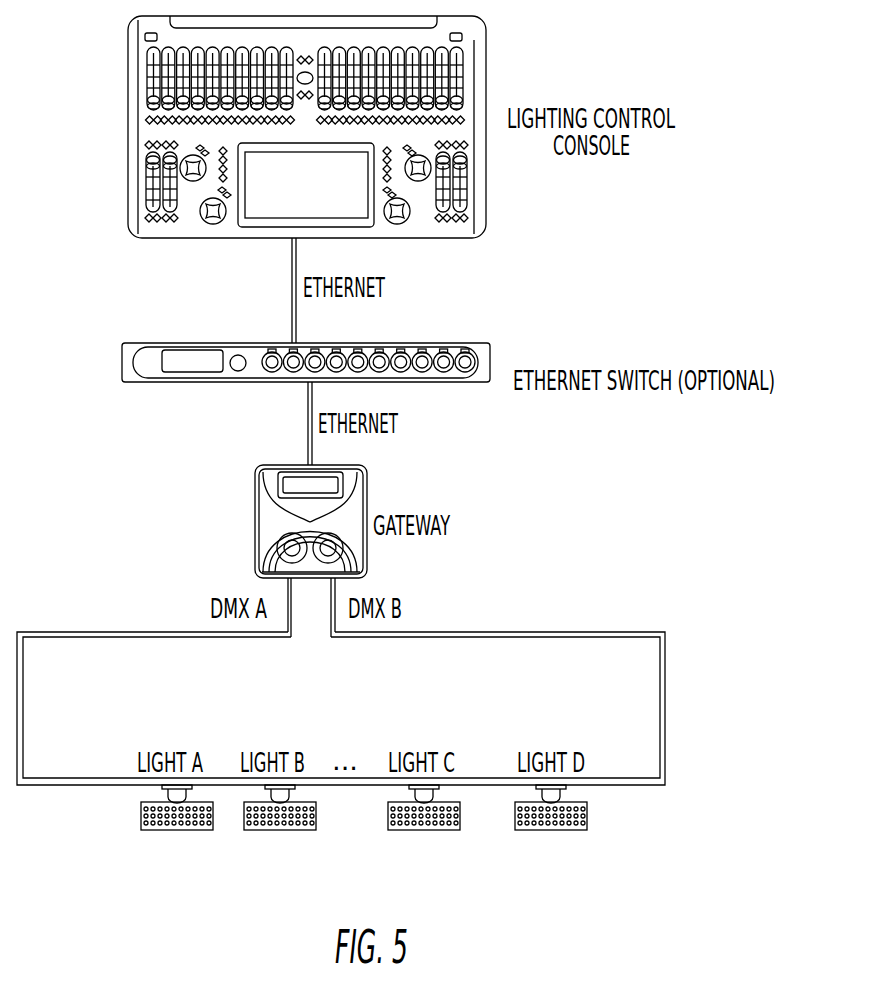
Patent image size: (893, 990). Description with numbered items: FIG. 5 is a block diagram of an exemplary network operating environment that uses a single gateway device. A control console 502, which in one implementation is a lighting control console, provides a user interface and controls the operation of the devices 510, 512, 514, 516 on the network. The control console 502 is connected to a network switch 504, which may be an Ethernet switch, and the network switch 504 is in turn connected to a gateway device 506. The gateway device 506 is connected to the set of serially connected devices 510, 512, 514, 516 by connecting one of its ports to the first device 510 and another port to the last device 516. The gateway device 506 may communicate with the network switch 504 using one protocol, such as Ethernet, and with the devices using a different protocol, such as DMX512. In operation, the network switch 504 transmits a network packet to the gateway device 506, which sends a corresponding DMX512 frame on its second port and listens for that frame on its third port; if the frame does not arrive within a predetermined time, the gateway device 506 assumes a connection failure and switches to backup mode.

The control console 502 is at (486, 78).
The network switch 504 is at (490, 352).
The gateway device 506 is at (367, 492).
The first device 510 is at (153, 832).
The device 512 is at (258, 832).
The device 514 is at (400, 832).
The last device 516 is at (525, 832).